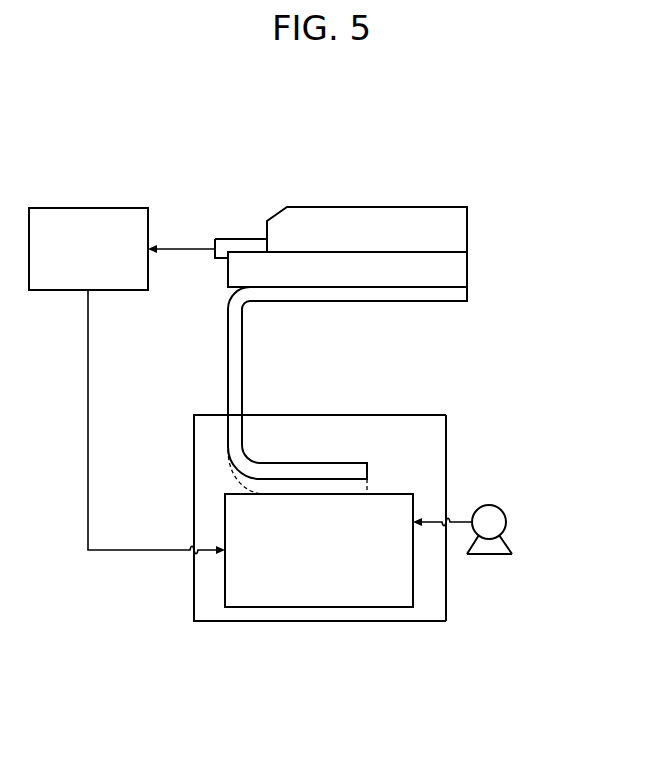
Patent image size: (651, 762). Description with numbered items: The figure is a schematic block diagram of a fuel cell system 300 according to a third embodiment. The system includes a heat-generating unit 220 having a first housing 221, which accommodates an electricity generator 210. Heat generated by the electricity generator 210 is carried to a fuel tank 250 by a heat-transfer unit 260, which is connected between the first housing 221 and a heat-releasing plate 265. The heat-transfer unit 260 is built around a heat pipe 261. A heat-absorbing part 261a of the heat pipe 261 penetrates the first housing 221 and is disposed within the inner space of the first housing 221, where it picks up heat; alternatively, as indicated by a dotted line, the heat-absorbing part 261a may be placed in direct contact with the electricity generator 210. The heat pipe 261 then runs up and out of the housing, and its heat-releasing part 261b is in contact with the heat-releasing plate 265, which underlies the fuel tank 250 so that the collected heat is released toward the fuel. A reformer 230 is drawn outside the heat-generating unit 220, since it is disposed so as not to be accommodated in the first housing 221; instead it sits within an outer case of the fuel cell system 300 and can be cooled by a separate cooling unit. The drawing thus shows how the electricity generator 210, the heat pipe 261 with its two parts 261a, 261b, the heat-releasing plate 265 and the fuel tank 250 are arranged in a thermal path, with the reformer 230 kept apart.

The fuel cell system 300 is at (358, 120).
The reformer 230 is at (108, 208).
The fuel tank 250 is at (400, 207).
The heat-releasing plate 265 is at (467, 262).
The heat-transfer unit 260 is at (478, 290).
The heat pipe 261 is at (217, 352).
The heat-absorbing part 261a is at (320, 463).
The heat-releasing part 261b is at (393, 302).
The heat-generating unit 220 is at (463, 419).
The first housing 221 is at (446, 470).
The electricity generator 210 is at (360, 607).